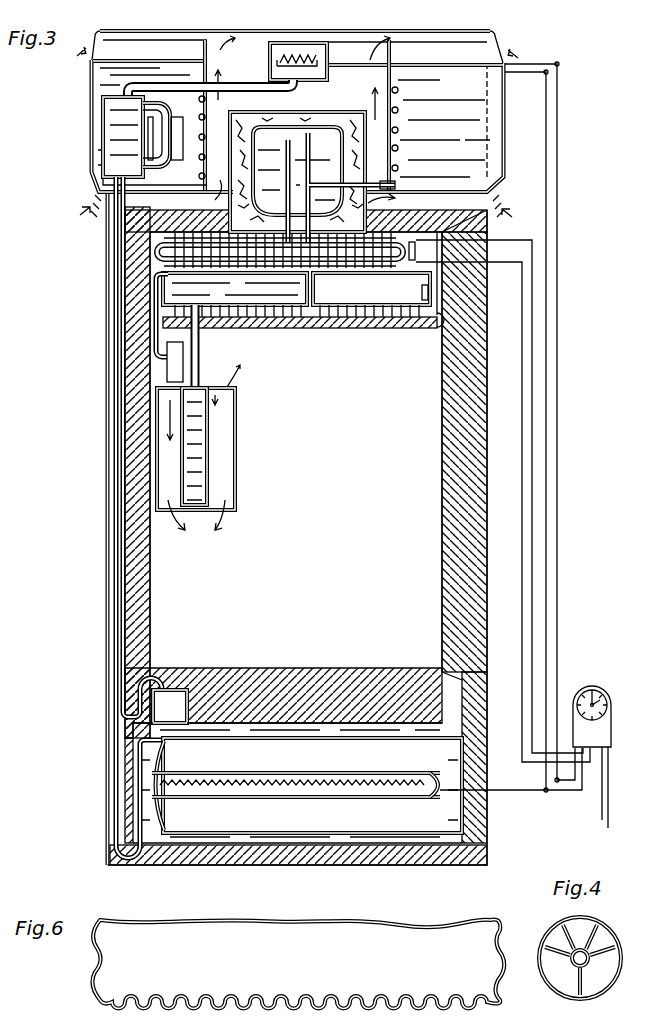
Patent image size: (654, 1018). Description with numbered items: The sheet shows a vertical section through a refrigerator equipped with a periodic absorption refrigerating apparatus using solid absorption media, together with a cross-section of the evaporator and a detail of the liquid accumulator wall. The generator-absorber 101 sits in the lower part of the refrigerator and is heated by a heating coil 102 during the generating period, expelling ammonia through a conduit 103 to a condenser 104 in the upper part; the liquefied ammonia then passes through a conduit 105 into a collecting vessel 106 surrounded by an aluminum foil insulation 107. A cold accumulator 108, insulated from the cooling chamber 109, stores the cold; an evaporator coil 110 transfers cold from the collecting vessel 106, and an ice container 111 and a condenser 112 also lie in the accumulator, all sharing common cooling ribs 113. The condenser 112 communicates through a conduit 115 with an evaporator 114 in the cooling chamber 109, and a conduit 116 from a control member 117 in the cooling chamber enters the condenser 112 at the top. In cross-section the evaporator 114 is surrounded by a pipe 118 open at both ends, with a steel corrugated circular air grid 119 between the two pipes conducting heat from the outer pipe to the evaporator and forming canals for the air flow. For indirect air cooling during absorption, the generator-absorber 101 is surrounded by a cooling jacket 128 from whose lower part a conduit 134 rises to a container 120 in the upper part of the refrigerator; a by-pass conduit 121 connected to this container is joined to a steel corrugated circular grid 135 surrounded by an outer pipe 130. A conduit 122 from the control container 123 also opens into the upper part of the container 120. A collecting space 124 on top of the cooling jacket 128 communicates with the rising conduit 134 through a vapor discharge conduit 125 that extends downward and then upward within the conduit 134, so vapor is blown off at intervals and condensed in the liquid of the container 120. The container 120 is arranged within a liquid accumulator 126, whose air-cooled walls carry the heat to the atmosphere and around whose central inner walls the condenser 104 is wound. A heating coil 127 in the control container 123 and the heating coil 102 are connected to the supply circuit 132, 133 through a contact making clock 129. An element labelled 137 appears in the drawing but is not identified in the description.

In FIG. 3, the generator-absorber 101 is at (360, 830).
In FIG. 3, the heating coil 102 is at (395, 790).
In FIG. 3, the conduit 103 is at (133, 574).
In FIG. 3, the condenser 104 is at (378, 82).
In FIG. 3, the conduit 105 is at (396, 193).
In FIG. 3, the collecting vessel 106 is at (335, 130).
In FIG. 3, the aluminum foil insulation 107 is at (292, 112).
In FIG. 3, the cold accumulator 108 is at (158, 250).
In FIG. 3, the cooling chamber 109 is at (420, 395).
In FIG. 3, the evaporator coil 110 is at (157, 265).
In FIG. 3, the ice container 111 is at (385, 300).
In FIG. 3, the condenser 112 is at (267, 290).
In FIG. 3, the cooling ribs 113 is at (285, 312).
In FIG. 3, the evaporator 114 is at (202, 462).
In FIG. 4, the evaporator 114 is at (572, 985).
In FIG. 3, the conduit 115 is at (201, 350).
In FIG. 3, the conduit 116 is at (154, 345).
In FIG. 3, the control member 117 is at (172, 362).
In FIG. 4, the pipe 118 is at (600, 990).
In FIG. 4, the steel corrugated circular air grid 119 is at (558, 925).
In FIG. 3, the container 120 is at (105, 113).
In FIG. 3, the by-pass conduit 121 is at (150, 128).
In FIG. 3, the conduit 122 is at (168, 86).
In FIG. 3, the control container 123 is at (322, 31).
In FIG. 3, the collecting space 124 is at (200, 690).
In FIG. 3, the vapor discharge conduit 125 is at (165, 680).
In FIG. 3, the liquid accumulator 126 is at (118, 68).
In FIG. 6, the liquid accumulator 126 is at (108, 980).
In FIG. 3, the heating coil 127 is at (272, 58).
In FIG. 3, the cooling jacket 128 is at (308, 845).
In FIG. 3, the contact making clock 129 is at (590, 686).
In FIG. 3, the outer pipe 130 is at (152, 140).
In FIG. 3, the supply circuit 132 is at (602, 818).
In FIG. 3, the supply circuit 133 is at (608, 828).
In FIG. 3, the conduit 134 is at (118, 504).
In FIG. 3, the steel corrugated circular grid 135 is at (205, 112).
In FIG. 3, the thermostat sensor 137 is at (416, 252).